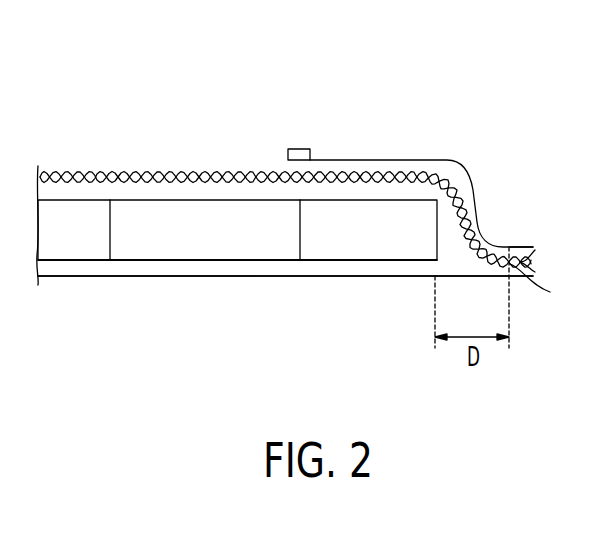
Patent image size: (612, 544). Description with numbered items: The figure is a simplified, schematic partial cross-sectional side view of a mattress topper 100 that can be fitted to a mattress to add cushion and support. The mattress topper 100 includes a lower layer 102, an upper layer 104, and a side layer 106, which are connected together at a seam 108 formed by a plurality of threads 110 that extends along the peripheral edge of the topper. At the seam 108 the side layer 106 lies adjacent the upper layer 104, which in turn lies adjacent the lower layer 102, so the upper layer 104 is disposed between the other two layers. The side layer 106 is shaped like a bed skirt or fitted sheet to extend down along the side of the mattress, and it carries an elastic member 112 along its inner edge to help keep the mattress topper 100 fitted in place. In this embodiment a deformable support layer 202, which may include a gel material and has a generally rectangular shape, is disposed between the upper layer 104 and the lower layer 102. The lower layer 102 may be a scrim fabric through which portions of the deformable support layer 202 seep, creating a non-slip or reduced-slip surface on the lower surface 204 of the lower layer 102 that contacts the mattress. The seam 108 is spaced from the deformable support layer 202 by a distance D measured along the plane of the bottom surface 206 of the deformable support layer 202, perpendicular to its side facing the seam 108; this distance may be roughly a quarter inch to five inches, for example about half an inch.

The mattress topper 100 is at (490, 82).
The lower layer 102 is at (106, 277).
The upper layer 104 is at (95, 172).
The side layer 106 is at (405, 160).
The seam 108 is at (524, 232).
The threads 110 is at (544, 286).
The elastic member 112 is at (298, 148).
The deformable support layer 202 is at (183, 212).
The lower surface 204 is at (330, 289).
The bottom surface 206 is at (221, 272).